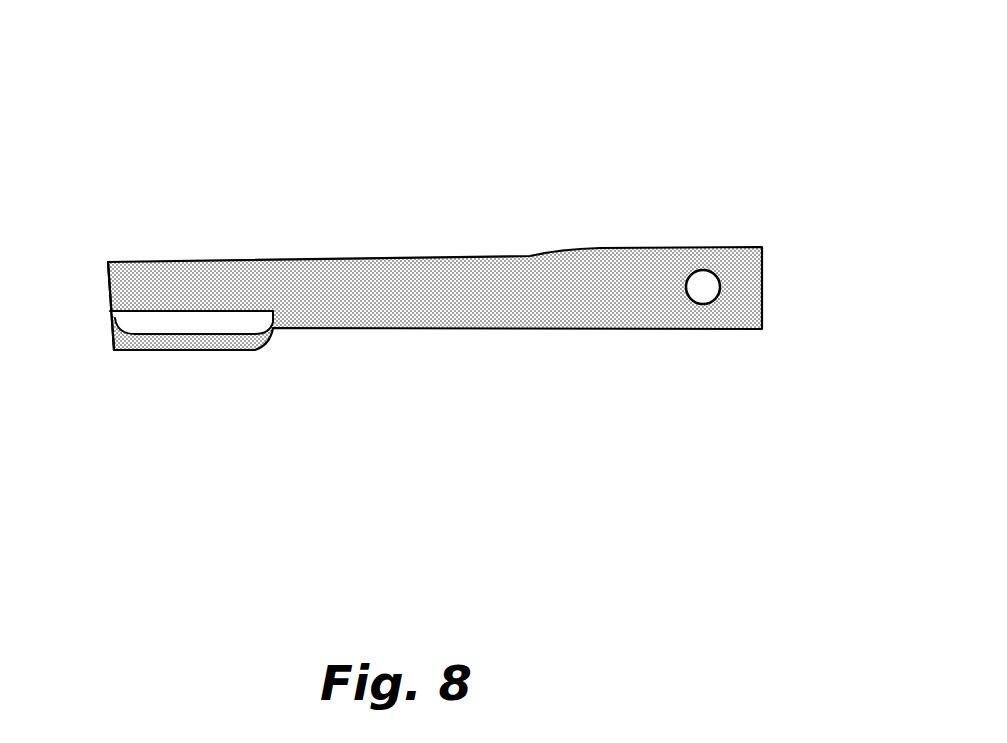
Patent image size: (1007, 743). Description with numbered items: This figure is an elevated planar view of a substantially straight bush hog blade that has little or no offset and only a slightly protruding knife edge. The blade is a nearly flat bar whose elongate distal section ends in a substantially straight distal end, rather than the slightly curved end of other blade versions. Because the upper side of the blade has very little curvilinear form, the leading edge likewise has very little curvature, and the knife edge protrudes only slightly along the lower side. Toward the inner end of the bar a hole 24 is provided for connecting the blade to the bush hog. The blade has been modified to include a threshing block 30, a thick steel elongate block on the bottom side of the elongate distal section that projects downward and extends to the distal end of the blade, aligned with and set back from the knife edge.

The hole 24 is at (712, 290).
The threshing block 30 is at (113, 350).